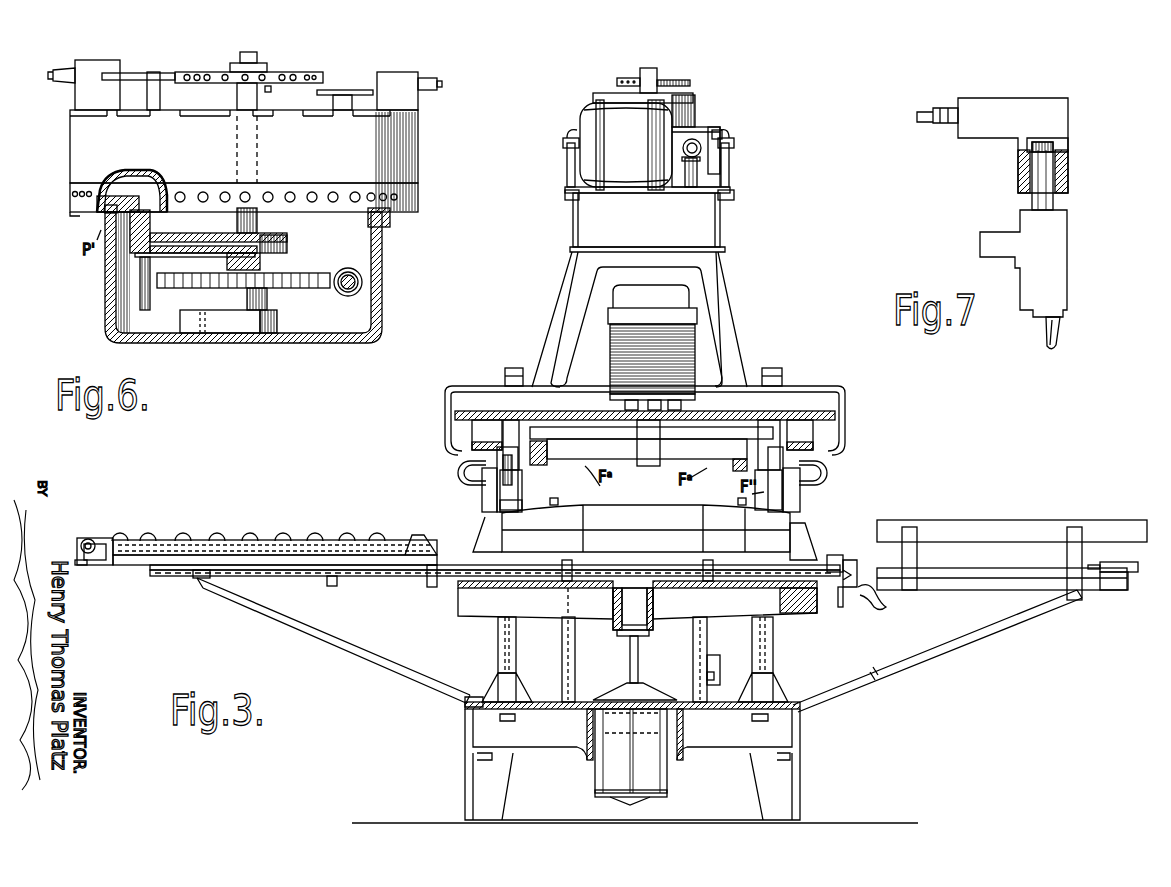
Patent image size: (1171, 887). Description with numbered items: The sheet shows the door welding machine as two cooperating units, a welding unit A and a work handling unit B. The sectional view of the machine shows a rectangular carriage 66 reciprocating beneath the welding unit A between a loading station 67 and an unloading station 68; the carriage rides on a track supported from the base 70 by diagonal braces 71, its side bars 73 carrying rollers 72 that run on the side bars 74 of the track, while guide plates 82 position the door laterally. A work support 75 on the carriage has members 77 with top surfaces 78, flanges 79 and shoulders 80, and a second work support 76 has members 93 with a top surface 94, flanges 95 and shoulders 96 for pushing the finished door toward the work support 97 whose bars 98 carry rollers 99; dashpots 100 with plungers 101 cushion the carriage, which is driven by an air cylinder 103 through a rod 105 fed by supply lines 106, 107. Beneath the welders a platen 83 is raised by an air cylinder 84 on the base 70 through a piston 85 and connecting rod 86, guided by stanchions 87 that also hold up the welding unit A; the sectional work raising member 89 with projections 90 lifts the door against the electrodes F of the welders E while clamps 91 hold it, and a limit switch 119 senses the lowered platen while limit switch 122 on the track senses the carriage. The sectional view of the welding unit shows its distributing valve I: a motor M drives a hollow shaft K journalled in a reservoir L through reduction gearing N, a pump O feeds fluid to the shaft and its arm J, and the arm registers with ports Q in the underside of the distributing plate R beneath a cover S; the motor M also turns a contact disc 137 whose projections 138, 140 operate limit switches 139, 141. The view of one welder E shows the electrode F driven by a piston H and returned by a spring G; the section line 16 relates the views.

In FIG. 6, the contact disc 137 is at (292, 72).
In FIG. 3, the contact disc 137 is at (626, 78).
In FIG. 6, the projection 138 is at (207, 72).
In FIG. 3, the projection 138 is at (690, 80).
In FIG. 6, the limit switch 139 is at (78, 68).
In FIG. 3, the limit switch 139 is at (672, 68).
In FIG. 6, the projection 140 is at (270, 91).
In FIG. 6, the limit switch 141 is at (420, 80).
In FIG. 6, the cover S is at (127, 171).
In FIG. 6, the distributing plate R is at (78, 212).
In FIG. 6, the ports Q is at (150, 212).
In FIG. 6, the arm J is at (182, 232).
In FIG. 6, the distributing valve I is at (147, 256).
In FIG. 6, the hollow shaft K is at (270, 262).
In FIG. 6, the reservoir L is at (380, 247).
In FIG. 6, the reduction gearing N is at (364, 282).
In FIG. 6, the pump O is at (270, 335).
In FIG. 3, the electric motor M is at (587, 160).
In FIG. 3, the welding unit A is at (833, 472).
In FIG. 3, the work handling unit B is at (842, 556).
In FIG. 7, the welders E is at (1068, 256).
In FIG. 3, the welders E is at (480, 492).
In FIG. 7, the electrodes F is at (1062, 342).
In FIG. 3, the electrodes F is at (500, 518).
In FIG. 7, the electrode operating pistons H is at (1028, 160).
In FIG. 7, the springs G is at (1019, 178).
In FIG. 3, the section line 16 is at (447, 524).
In FIG. 3, the carriage 66 is at (655, 556).
In FIG. 3, the loading station 67 is at (955, 519).
In FIG. 3, the unloading station 68 is at (245, 536).
In FIG. 3, the base 70 is at (468, 728).
In FIG. 3, the diagonal braces 71 is at (350, 636).
In FIG. 3, the rollers 72 is at (412, 536).
In FIG. 3, the side bars 73 is at (955, 589).
In FIG. 3, the side bars 74 is at (267, 577).
In FIG. 3, the work support 75 is at (593, 553).
In FIG. 3, the work support 76 is at (380, 547).
In FIG. 3, the members 77 is at (770, 558).
In FIG. 3, the top surfaces 78 is at (712, 555).
In FIG. 3, the flanges 79 is at (826, 558).
In FIG. 3, the shoulders 80 is at (520, 540).
In FIG. 3, the guide plates 82 is at (995, 525).
In FIG. 3, the platen 83 is at (815, 616).
In FIG. 3, the air cylinder 84 is at (655, 771).
In FIG. 3, the piston 85 is at (613, 740).
In FIG. 3, the connecting rod 86 is at (640, 662).
In FIG. 3, the stanchions 87 is at (497, 637).
In FIG. 3, the work raising member 89 is at (505, 532).
In FIG. 3, the projections 90 is at (556, 502).
In FIG. 3, the clamps 91 is at (512, 508).
In FIG. 3, the members 93 is at (420, 538).
In FIG. 3, the top surface 94 is at (364, 543).
In FIG. 3, the flanges 95 is at (413, 552).
In FIG. 3, the shoulders 96 is at (425, 540).
In FIG. 3, the work support 97 is at (137, 539).
In FIG. 3, the bars 98 is at (207, 544).
In FIG. 3, the rollers 99 is at (284, 543).
In FIG. 3, the dashpots 100 is at (172, 539).
In FIG. 3, the plungers 101 is at (1093, 565).
In FIG. 3, the air cylinder 103 is at (537, 590).
In FIG. 3, the rod 105 is at (138, 576).
In FIG. 3, the fluid pressure supply line 106 is at (841, 602).
In FIG. 3, the fluid pressure supply line 107 is at (430, 586).
In FIG. 3, the limit switch 119 is at (707, 665).
In FIG. 3, the limit switch 122 is at (872, 603).